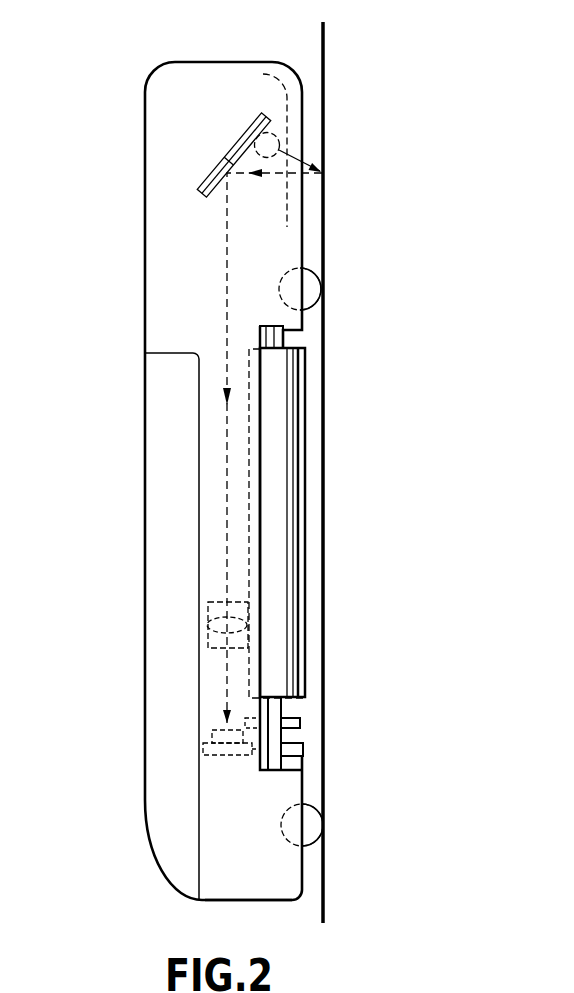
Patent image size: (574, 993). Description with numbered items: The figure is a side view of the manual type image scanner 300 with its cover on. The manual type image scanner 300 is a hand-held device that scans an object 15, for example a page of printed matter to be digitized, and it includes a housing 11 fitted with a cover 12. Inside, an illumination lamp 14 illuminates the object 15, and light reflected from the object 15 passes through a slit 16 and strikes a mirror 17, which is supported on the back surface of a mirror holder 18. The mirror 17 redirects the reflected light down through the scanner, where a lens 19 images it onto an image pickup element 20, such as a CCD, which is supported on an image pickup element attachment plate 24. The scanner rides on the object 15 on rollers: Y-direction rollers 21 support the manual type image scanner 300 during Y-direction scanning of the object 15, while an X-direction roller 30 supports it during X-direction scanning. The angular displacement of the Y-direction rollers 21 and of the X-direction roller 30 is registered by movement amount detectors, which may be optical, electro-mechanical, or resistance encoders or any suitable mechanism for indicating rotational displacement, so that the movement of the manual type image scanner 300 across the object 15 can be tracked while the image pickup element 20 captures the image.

The manual type image scanner 300 is at (196, 44).
The object 15 is at (323, 57).
The illumination lamp 14 is at (268, 144).
The mirror holder 18 is at (214, 169).
The slit 16 is at (291, 188).
The mirror 17 is at (210, 197).
The Y-direction rollers 21 is at (313, 292).
The X-direction roller 30 is at (290, 441).
The lens 19 is at (212, 610).
The image pickup element 20 is at (212, 734).
The image pickup element attachment plate 24 is at (220, 755).
The cover 12 is at (157, 858).
The housing 11 is at (222, 900).